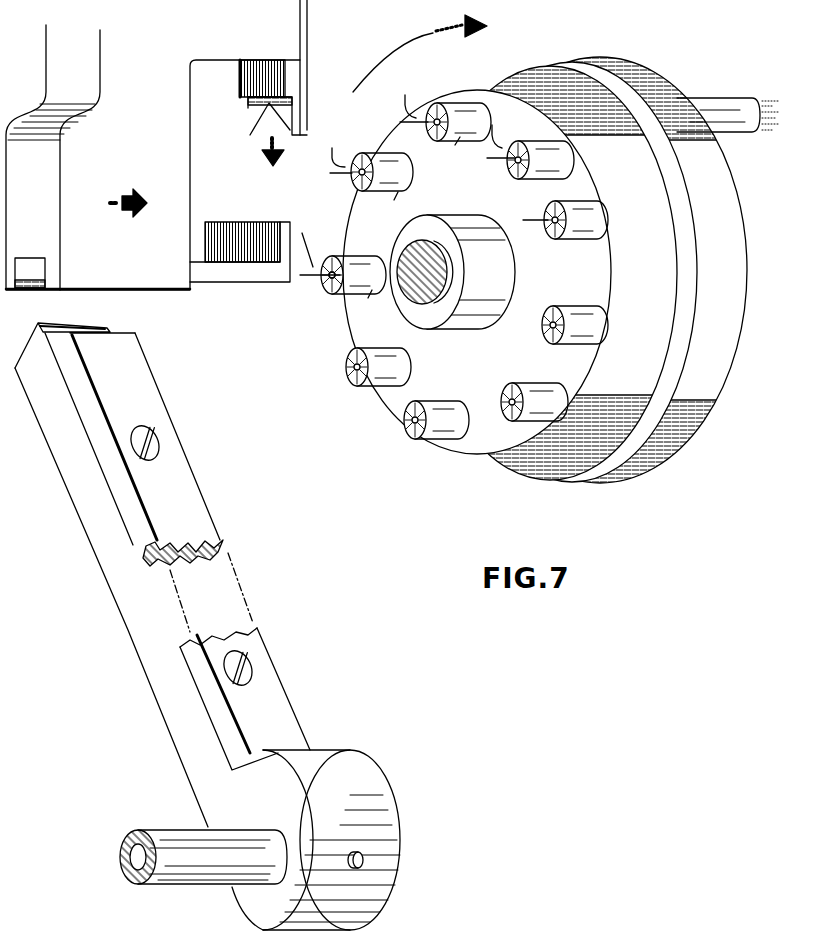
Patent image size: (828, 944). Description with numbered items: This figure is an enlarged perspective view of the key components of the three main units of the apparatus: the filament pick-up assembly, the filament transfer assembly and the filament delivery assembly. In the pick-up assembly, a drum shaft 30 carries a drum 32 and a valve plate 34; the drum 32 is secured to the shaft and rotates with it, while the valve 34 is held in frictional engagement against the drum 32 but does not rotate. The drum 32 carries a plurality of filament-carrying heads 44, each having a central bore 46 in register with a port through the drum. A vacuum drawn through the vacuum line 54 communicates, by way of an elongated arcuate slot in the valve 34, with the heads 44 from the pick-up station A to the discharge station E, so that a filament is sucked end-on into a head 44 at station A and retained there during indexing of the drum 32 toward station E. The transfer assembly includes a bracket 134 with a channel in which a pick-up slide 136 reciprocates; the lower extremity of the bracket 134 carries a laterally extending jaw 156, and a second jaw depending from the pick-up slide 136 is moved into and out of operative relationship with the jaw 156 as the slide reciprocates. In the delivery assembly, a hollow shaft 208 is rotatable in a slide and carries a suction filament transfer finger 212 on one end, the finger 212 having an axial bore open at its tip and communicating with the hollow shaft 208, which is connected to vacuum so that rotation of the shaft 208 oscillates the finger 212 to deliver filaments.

The drum shaft 30 is at (447, 325).
The drum 32 is at (647, 301).
The valve plate 34 is at (727, 308).
The filament-carrying heads 44 is at (337, 292).
The central bore 46 is at (326, 262).
The vacuum line 54 is at (757, 100).
The bracket 134 is at (178, 283).
The pick-up slide 136 is at (293, 72).
The jaw 156 is at (258, 225).
The hollow shaft 208 is at (168, 830).
The suction filament transfer finger 212 is at (203, 513).